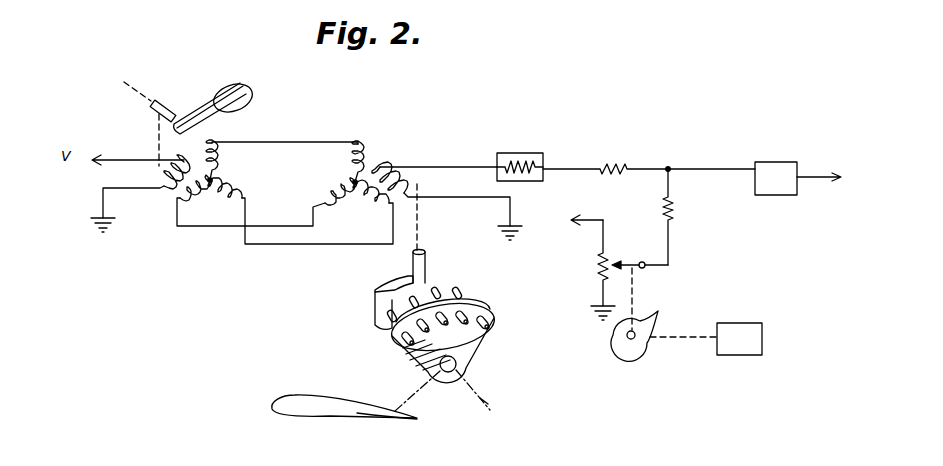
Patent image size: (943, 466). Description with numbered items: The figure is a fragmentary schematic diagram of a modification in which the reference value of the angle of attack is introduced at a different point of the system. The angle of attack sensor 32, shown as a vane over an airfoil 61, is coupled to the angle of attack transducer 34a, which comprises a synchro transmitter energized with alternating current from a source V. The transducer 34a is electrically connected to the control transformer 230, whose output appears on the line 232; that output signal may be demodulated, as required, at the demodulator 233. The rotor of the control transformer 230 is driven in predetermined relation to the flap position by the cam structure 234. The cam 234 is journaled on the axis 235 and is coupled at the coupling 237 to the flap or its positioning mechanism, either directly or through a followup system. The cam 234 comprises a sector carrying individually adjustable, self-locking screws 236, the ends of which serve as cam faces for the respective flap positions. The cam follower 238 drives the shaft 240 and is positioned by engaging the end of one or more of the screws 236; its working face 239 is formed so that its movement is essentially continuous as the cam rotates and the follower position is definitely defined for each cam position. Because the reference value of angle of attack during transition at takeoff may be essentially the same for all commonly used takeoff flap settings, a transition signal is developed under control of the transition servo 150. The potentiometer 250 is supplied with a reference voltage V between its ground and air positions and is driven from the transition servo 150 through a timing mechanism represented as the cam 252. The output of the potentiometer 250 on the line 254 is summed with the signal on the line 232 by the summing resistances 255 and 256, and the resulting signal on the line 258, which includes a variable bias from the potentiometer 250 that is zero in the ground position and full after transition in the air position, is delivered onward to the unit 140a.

The sensor 32 is at (228, 87).
The angle of attack transducer 34a is at (178, 150).
The airfoil 61 is at (389, 420).
The control unit 140a is at (818, 149).
The transition servo 150 is at (743, 322).
The control transformer 230 is at (384, 152).
The output line 232 is at (455, 155).
The demodulator 233 is at (543, 146).
The cam structure 234 is at (470, 353).
The axis 235 is at (483, 397).
The self-locking screws 236 is at (492, 327).
The coupling 237 is at (417, 392).
The cam follower 238 is at (381, 290).
The working face 239 is at (380, 311).
The shaft 240 is at (427, 268).
The potentiometer 250 is at (587, 271).
The cam 252 is at (636, 356).
The line 254 is at (670, 264).
The summing resistance 255 is at (626, 168).
The summing resistance 256 is at (671, 210).
The line 258 is at (733, 161).